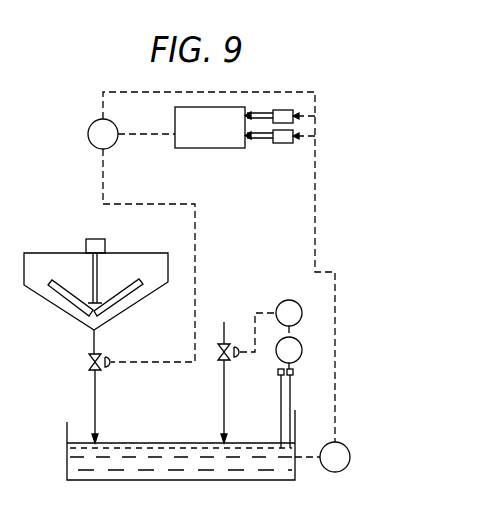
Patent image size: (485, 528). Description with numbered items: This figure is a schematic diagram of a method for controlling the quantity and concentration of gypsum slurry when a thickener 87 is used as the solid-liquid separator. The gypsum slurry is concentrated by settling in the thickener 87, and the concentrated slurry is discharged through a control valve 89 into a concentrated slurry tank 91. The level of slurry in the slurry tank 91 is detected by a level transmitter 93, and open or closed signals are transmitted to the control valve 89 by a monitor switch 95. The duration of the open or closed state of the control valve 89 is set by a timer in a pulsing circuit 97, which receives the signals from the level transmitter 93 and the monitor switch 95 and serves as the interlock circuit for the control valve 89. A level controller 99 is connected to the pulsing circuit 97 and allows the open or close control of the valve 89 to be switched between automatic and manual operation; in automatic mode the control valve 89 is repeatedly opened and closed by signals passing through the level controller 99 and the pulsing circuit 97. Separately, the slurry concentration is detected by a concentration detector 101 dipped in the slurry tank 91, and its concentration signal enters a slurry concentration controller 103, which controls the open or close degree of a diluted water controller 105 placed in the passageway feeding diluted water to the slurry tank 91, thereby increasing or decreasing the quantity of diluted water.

The thickener 87 is at (43, 296).
The control valve 89 is at (88, 362).
The concentrated slurry tank 91 is at (153, 443).
The level transmitter 93 is at (346, 447).
The monitor switch 95 is at (285, 144).
The pulsing circuit 97 is at (218, 144).
The level controller 99 is at (92, 121).
The concentration detector 101 is at (312, 338).
The slurry concentration controller 103 is at (300, 300).
The diluted water controller 105 is at (238, 355).